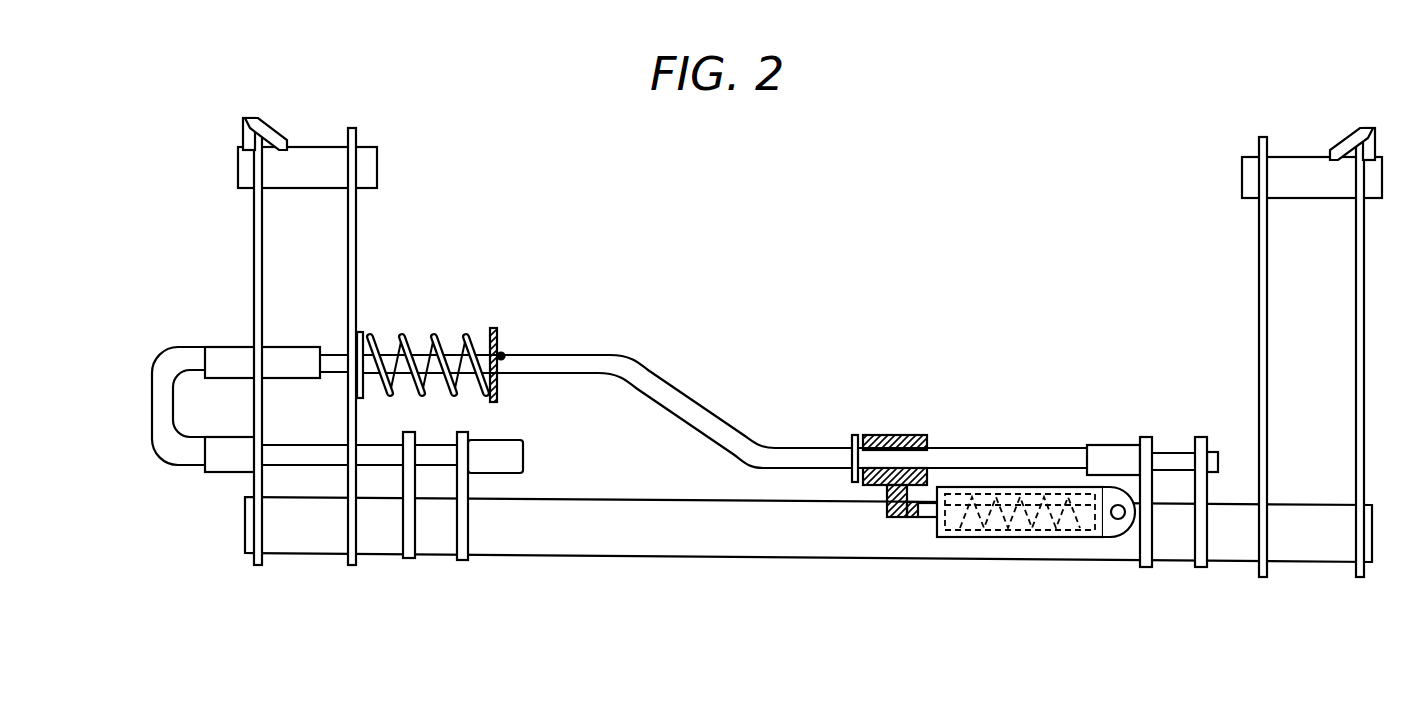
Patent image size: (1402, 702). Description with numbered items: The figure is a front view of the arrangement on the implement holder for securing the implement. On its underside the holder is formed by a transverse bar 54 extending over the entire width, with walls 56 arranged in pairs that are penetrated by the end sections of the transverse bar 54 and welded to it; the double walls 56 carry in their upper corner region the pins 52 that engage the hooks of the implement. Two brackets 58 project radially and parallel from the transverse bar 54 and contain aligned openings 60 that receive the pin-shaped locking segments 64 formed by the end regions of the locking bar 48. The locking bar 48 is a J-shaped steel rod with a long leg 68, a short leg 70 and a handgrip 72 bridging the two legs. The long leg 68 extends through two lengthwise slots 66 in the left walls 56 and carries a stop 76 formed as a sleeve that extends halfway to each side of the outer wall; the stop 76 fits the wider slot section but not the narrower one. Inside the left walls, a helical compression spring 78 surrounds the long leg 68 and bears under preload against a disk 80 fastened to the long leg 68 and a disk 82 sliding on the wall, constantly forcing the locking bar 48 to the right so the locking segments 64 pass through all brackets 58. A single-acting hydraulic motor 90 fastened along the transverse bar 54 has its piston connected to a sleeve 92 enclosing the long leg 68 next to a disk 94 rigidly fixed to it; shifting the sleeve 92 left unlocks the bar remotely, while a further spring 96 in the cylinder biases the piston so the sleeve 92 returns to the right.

The locking bar 48 is at (627, 343).
The pin 52 is at (308, 175).
The transverse bar 54 is at (740, 550).
The walls 56 is at (346, 131).
The brackets 58 is at (469, 490).
The openings 60 is at (411, 432).
The locking segments 64 is at (440, 458).
The lengthwise slots 66 is at (253, 338).
The long leg 68 is at (803, 455).
The short leg 70 is at (302, 453).
The handgrip 72 is at (160, 414).
The stop 76 is at (233, 368).
The spring 78 is at (442, 337).
The disk 80 is at (496, 330).
The disk 82 is at (361, 334).
The hydraulic motor 90 is at (985, 540).
The sleeve 92 is at (915, 433).
The disk 94 is at (854, 433).
The further spring 96 is at (1040, 538).